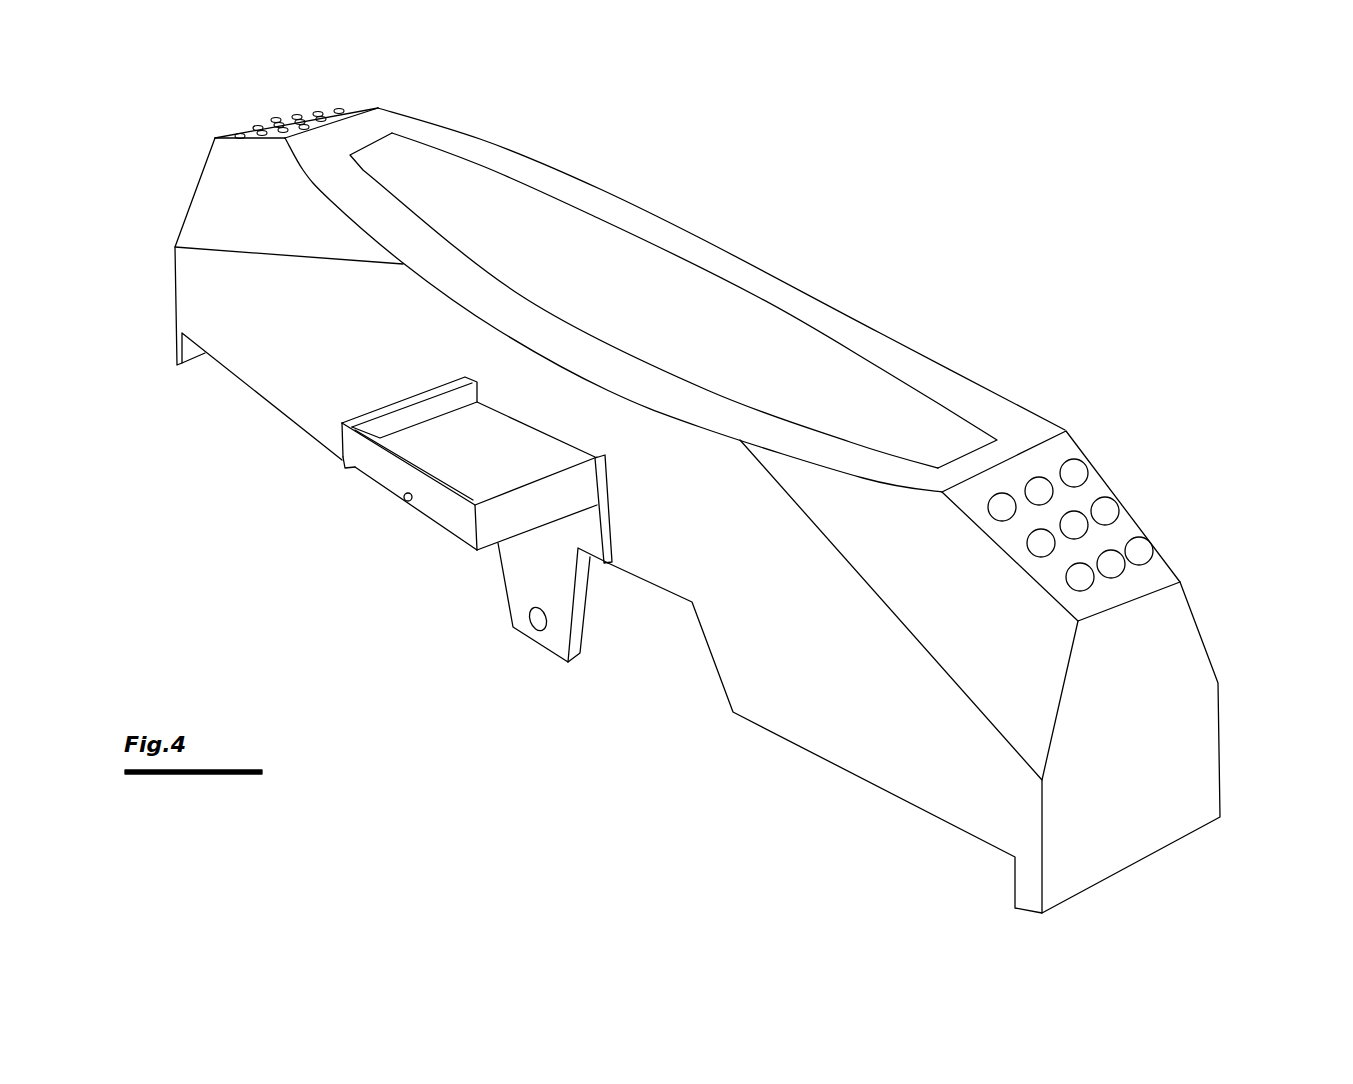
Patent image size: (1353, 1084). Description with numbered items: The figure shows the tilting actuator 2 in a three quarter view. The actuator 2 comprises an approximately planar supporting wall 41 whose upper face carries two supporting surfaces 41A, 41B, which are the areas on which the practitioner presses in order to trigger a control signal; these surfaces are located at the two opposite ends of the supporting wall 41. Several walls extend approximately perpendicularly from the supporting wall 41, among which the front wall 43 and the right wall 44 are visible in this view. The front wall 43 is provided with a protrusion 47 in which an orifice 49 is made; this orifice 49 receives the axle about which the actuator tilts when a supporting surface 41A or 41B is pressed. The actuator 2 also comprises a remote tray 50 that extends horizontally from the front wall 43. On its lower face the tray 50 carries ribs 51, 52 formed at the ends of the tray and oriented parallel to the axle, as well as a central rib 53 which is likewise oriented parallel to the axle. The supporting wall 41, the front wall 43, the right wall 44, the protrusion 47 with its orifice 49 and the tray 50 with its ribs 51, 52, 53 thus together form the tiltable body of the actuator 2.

The tilting actuator 2 is at (922, 334).
The supporting wall 41 is at (697, 296).
The supporting surface 41A is at (283, 135).
The supporting surface 41B is at (1100, 542).
The front wall 43 is at (777, 685).
The right wall 44 is at (1190, 727).
The protrusion 47 is at (523, 572).
The orifice 49 is at (528, 622).
The remote tray 50 is at (435, 438).
The rib 51 is at (340, 457).
The rib 52 is at (468, 540).
The central rib 53 is at (404, 497).